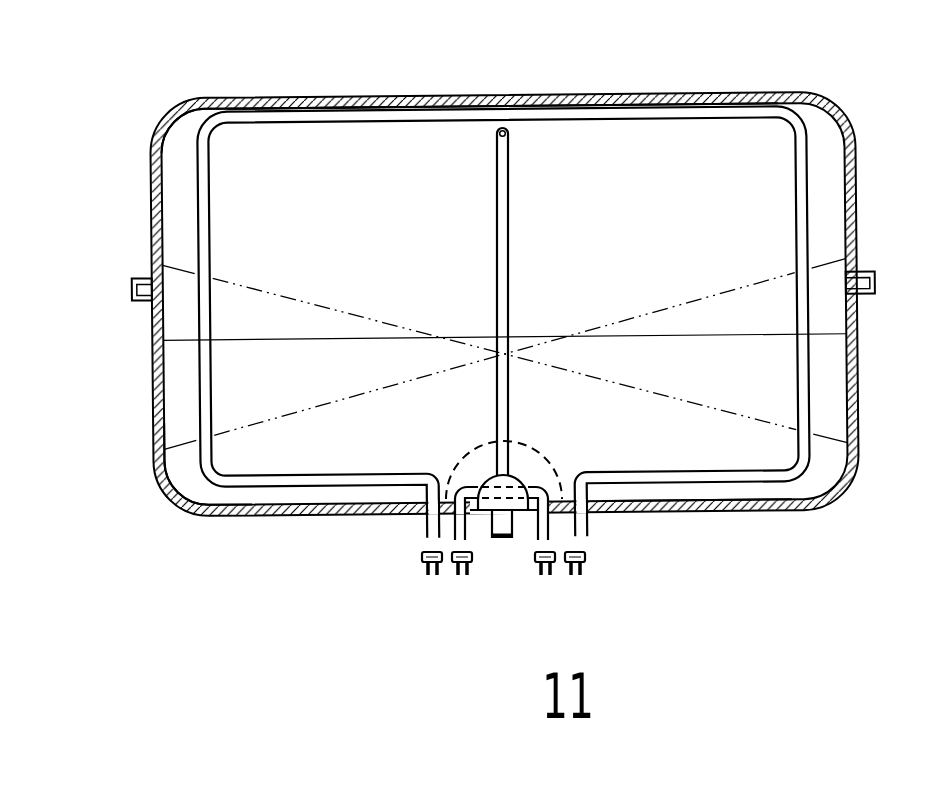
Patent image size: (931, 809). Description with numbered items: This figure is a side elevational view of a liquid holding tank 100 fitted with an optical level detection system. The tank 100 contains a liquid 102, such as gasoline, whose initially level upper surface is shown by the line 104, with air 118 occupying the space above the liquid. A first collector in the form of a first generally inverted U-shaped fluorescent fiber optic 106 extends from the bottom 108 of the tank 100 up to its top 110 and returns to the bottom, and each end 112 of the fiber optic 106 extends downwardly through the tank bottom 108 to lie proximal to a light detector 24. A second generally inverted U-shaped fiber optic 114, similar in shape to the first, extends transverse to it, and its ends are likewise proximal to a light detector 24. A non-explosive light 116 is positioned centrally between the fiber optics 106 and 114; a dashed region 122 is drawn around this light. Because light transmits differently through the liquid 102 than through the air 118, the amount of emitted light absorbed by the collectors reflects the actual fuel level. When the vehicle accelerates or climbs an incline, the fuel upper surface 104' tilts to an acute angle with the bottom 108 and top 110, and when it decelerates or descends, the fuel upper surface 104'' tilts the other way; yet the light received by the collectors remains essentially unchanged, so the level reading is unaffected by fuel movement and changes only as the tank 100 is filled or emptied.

The tank 100 is at (187, 98).
The liquid 102 is at (207, 474).
The line 104 is at (456, 305).
The fuel upper surface 104' is at (442, 354).
The fuel upper surface 104'' is at (442, 339).
The first generally inverted U-shaped fluorescent fiber optic 106 is at (272, 122).
The bottom 108 is at (745, 512).
The top 110 is at (508, 97).
The end 112 is at (460, 536).
The second generally inverted U-shaped fiber optic 114 is at (503, 185).
The non-explosive light 116 is at (480, 473).
The air 118 is at (262, 208).
The bulb region 122 is at (545, 456).
The light detector 24 is at (420, 561).